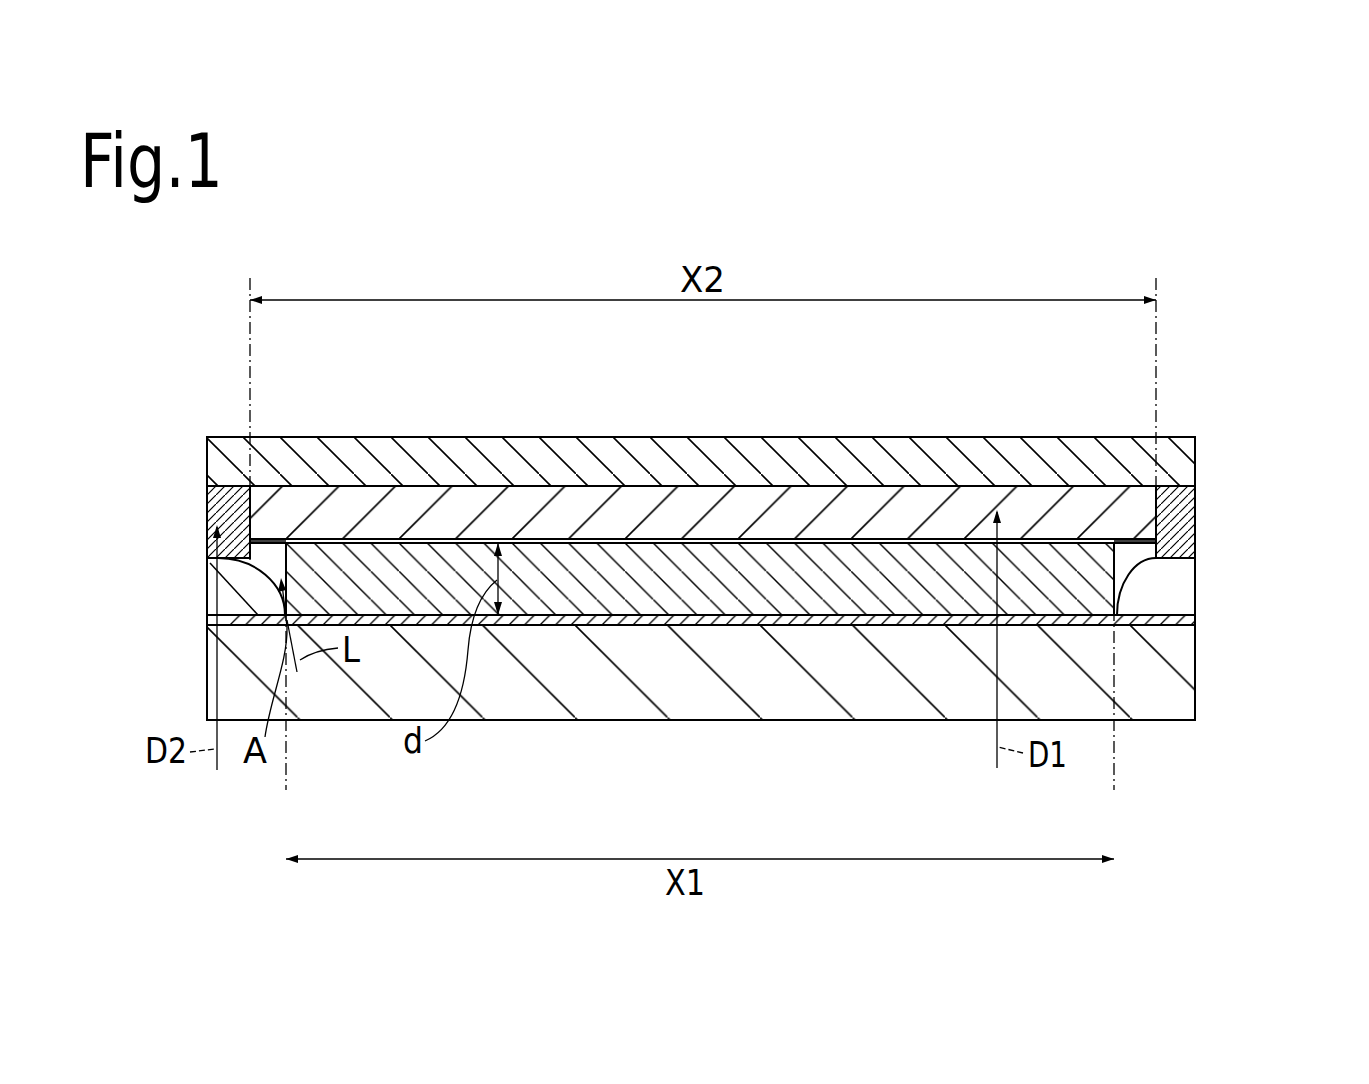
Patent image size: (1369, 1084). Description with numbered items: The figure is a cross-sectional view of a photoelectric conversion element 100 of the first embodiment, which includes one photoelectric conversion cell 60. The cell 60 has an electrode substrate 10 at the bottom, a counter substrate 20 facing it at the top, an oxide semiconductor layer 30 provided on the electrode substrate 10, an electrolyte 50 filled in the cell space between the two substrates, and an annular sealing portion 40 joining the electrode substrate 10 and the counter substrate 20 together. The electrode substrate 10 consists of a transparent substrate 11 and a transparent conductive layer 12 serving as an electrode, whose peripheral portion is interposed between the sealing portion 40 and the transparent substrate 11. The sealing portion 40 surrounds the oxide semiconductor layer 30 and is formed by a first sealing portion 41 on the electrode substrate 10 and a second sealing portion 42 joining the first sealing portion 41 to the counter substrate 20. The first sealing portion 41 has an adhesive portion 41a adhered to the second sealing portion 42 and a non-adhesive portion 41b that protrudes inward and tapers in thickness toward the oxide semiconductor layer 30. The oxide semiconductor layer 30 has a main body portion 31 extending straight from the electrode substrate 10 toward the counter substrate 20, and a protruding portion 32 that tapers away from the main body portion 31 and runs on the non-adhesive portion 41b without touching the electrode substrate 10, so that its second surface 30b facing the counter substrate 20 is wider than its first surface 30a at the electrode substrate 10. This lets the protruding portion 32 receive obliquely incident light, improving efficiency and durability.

The photoelectric conversion element 100 is at (1084, 244).
The electrode substrate 10 is at (701, 737).
The transparent substrate 11 is at (685, 788).
The transparent conductive layer 12 is at (693, 626).
The counter substrate 20 is at (684, 427).
The oxide semiconductor layer 30 is at (917, 598).
The first surface 30a is at (792, 627).
The second surface 30b is at (585, 543).
The main body portion 31 is at (848, 539).
The protruding portion 32 is at (271, 545).
The sealing portion 40 is at (702, 586).
The first sealing portion 41 is at (700, 614).
The adhesive portion 41a is at (207, 598).
The non-adhesive portion 41b is at (210, 627).
The second sealing portion 42 is at (207, 527).
The electrolyte 50 is at (458, 515).
The photoelectric conversion cell 60 is at (1183, 427).